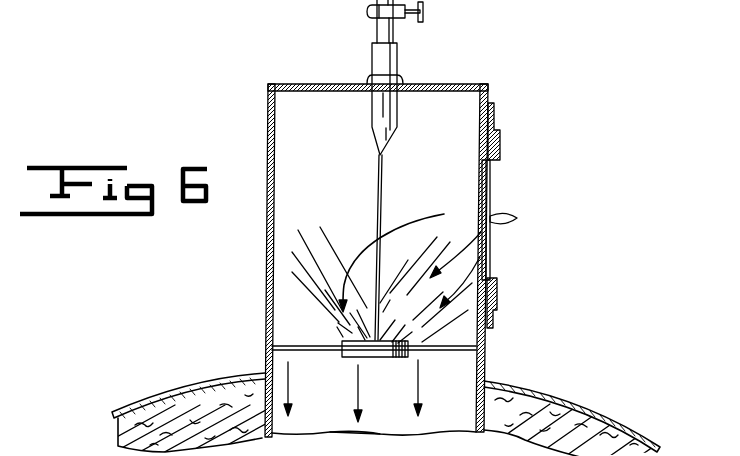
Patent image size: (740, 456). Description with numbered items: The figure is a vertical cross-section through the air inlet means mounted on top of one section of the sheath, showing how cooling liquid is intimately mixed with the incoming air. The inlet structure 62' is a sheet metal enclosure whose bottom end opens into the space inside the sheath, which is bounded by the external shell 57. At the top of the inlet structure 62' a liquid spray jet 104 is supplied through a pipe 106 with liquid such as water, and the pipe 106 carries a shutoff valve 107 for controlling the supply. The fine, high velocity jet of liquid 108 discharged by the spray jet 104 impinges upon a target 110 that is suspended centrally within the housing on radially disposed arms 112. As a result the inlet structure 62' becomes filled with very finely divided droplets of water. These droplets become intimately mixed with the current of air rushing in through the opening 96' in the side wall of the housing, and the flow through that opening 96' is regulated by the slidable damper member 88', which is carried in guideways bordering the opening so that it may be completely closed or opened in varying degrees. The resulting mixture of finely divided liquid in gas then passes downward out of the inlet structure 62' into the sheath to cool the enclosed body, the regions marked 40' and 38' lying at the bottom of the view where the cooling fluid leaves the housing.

The inlet structure 62' is at (349, 256).
The pipe 106 is at (368, 8).
The shutoff valve 107 is at (375, 22).
The liquid spray jet 104 is at (383, 70).
The jet of liquid 108 is at (380, 217).
The damper member 88' is at (519, 215).
The opening 96' is at (411, 250).
The target 110 is at (383, 347).
The radially disposed arms 112 is at (322, 357).
The external shell 57 is at (547, 400).
The ground 40' is at (374, 443).
The ground layer 38' is at (365, 444).